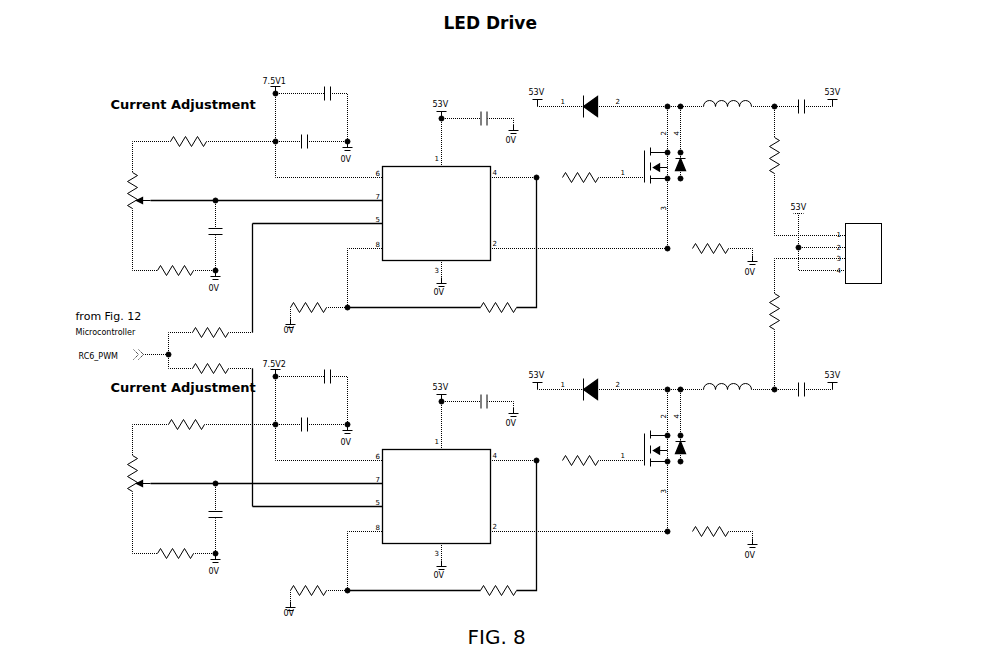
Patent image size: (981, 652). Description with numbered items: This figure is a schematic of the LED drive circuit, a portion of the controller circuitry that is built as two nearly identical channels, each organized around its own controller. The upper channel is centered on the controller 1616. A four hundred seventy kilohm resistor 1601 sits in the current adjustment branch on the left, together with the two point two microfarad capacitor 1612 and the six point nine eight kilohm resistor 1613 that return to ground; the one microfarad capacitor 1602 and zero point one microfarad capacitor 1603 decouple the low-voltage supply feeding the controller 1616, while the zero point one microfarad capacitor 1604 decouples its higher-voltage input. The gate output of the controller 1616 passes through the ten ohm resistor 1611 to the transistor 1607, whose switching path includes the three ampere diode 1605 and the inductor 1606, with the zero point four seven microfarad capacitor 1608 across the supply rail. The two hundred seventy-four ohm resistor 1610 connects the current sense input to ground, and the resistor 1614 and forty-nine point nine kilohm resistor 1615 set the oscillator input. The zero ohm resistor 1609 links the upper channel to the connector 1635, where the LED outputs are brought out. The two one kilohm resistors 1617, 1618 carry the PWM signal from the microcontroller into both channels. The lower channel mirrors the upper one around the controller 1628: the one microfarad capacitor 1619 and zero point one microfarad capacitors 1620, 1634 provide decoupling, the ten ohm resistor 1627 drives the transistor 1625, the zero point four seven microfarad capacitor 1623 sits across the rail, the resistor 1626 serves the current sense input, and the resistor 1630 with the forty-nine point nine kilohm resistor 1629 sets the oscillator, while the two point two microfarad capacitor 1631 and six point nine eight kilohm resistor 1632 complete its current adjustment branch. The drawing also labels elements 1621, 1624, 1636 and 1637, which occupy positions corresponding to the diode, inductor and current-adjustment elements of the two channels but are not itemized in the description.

The 470 k resistor 1601 is at (188, 134).
The 1 µF capacitor 1602 is at (329, 82).
The 0.1 µF capacitor 1603 is at (304, 129).
The 0.1 µF capacitor 1604 is at (482, 106).
The 3 A diode 1605 is at (589, 99).
The inductor 1606 is at (728, 97).
The transistor 1607 is at (732, 218).
The 0.47 µF capacitor 1608 is at (803, 94).
The zero ohm resistor 1609 is at (794, 156).
The 274 ohm resistor 1610 is at (711, 239).
The 10 ohm resistor 1611 is at (581, 169).
The 2.2 µF capacitor 1612 is at (196, 234).
The 6.98 k resistor 1613 is at (176, 263).
The resistor 1614 is at (311, 297).
The 49.9 k resistor 1615 is at (498, 299).
The controller 1616 is at (437, 214).
The 1 k resistor 1617 is at (211, 323).
The 1 k resistor 1618 is at (211, 360).
The 1 µF capacitor 1619 is at (329, 365).
The 0.1 µF capacitor 1620 is at (482, 389).
The diode 1621 is at (589, 382).
The 0.47 µF capacitor 1623 is at (803, 377).
The inductor 1624 is at (728, 379).
The transistor 1625 is at (684, 461).
The resistor 1626 is at (716, 523).
The 10 ohm resistor 1627 is at (581, 452).
The controller 1628 is at (437, 497).
The 49.9 k resistor 1629 is at (498, 582).
The resistor 1630 is at (311, 580).
The 2.2 µF capacitor 1631 is at (197, 517).
The 6.98 k resistor 1632 is at (176, 546).
The 0.1 µF capacitor 1634 is at (304, 412).
The connector 1635 is at (525, 317).
The potentiometer 1636 is at (158, 206).
The potentiometer 1637 is at (158, 489).